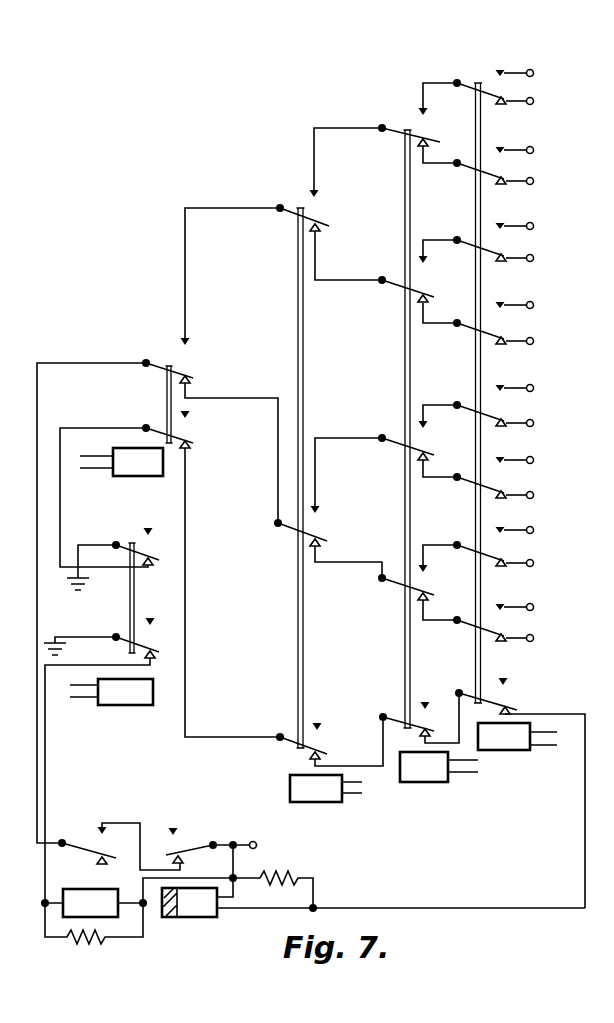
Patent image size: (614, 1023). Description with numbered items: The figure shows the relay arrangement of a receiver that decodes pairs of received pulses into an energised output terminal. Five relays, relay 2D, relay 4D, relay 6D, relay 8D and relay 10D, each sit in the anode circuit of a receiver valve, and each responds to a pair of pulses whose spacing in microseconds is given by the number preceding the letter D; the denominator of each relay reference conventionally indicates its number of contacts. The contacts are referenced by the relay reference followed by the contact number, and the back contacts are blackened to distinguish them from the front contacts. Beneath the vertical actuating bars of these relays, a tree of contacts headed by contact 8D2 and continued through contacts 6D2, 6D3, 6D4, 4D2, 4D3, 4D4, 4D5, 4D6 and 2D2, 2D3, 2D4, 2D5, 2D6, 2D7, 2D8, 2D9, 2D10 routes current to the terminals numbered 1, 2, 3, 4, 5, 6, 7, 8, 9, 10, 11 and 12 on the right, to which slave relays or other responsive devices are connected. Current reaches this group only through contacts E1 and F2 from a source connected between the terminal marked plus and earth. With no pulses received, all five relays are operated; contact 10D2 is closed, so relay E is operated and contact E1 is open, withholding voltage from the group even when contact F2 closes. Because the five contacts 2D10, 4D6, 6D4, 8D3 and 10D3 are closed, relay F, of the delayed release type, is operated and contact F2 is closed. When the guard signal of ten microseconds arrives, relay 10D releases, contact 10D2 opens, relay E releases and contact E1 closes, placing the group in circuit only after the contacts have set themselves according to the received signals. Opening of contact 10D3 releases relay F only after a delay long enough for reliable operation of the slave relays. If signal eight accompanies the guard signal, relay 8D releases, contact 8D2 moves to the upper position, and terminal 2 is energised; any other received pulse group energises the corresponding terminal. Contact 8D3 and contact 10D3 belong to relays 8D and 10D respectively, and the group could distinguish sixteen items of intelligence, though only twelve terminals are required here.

The relay 2D is at (500, 751).
The relay 4D is at (425, 783).
The relay 6D is at (310, 803).
The relay 8D is at (120, 478).
The relay 10D is at (120, 707).
The contact 2D2 is at (472, 82).
The contact 2D3 is at (486, 172).
The contact 2D4 is at (471, 239).
The contact 2D5 is at (470, 322).
The contact 2D6 is at (470, 404).
The contact 2D7 is at (468, 476).
The contact 2D8 is at (468, 545).
The contact 2D9 is at (470, 620).
The contact 2D10 is at (506, 705).
The contact 4D2 is at (395, 127).
The contact 4D3 is at (390, 280).
The contact 4D4 is at (388, 437).
The contact 4D5 is at (390, 577).
The contact 4D6 is at (390, 716).
The contact 6D2 is at (289, 222).
The contact 6D3 is at (296, 540).
The contact 6D4 is at (290, 748).
The contact 8D2 is at (186, 375).
The contact 8D3 is at (189, 444).
The contact 10D2 is at (148, 646).
The contact 10D3 is at (155, 556).
The contact E1 is at (78, 851).
The contact F2 is at (192, 851).
The relay E is at (108, 918).
The relay F is at (195, 920).
The terminal 1 is at (533, 567).
The terminal 2 is at (533, 345).
The terminal 3 is at (533, 499).
The terminal 4 is at (533, 427).
The terminal 5 is at (533, 309).
The terminal 6 is at (533, 392).
The terminal 7 is at (533, 229).
The terminal 8 is at (533, 105).
The terminal 9 is at (533, 611).
The terminal 10 is at (533, 534).
The terminal 11 is at (533, 262).
The terminal 12 is at (533, 154).